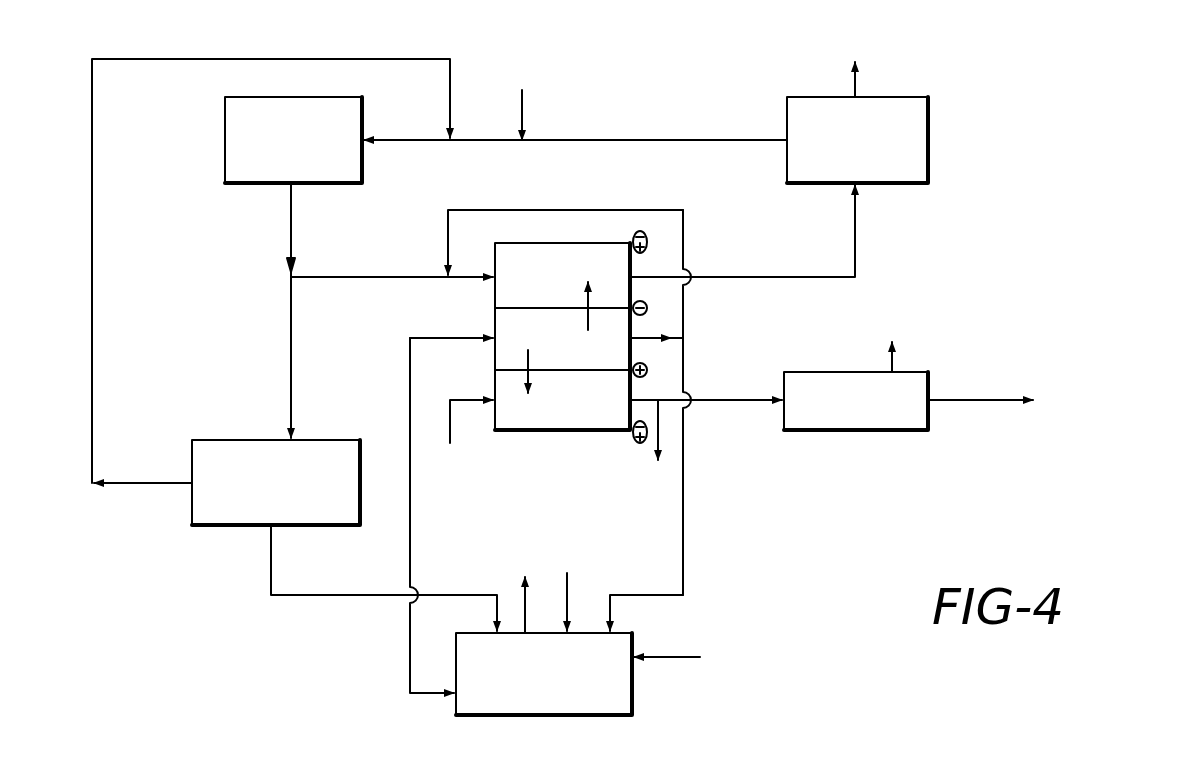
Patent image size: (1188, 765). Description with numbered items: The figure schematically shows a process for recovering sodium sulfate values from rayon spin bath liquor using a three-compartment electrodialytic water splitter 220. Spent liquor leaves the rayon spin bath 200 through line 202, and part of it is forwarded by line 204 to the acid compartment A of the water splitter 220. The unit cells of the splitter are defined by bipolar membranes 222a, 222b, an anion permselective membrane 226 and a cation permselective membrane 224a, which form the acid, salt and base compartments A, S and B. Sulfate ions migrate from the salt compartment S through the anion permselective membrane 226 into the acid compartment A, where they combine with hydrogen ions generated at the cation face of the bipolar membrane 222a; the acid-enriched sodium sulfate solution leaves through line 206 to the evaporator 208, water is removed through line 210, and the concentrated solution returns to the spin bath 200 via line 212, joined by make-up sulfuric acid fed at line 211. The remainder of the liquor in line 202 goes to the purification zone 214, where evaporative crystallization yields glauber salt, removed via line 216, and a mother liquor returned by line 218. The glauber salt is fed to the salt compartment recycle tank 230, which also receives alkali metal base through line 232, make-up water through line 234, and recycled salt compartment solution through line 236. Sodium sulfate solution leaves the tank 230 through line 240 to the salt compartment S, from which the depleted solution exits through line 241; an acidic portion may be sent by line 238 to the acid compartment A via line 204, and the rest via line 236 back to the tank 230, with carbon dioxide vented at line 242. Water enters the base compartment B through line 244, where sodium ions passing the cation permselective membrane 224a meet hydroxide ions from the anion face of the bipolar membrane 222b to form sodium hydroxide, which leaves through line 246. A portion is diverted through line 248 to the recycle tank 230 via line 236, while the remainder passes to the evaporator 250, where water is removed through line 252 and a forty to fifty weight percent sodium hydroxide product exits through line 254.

The rayon spin bath 200 is at (225, 130).
The line 202 is at (289, 250).
The line 204 is at (321, 278).
The line 206 is at (855, 253).
The evaporator 208 is at (928, 138).
The line 210 is at (855, 88).
The make-up sulfuric acid feed 211 is at (522, 112).
The line 212 is at (622, 142).
The purification zone 214 is at (232, 440).
The line 216 is at (270, 575).
The line 218 is at (450, 90).
The three-compartment electrodialytic water splitter 220 is at (595, 432).
The bipolar membrane 222a is at (620, 242).
The bipolar membrane 222b is at (630, 436).
The cation permselective membrane 224a is at (632, 360).
The anion permselective membrane 226 is at (632, 302).
The salt compartment recycle tank 230 is at (540, 715).
The line 232 is at (568, 598).
The line 234 is at (672, 660).
The line 236 is at (683, 585).
The line 238 is at (511, 210).
The line 240 is at (410, 378).
The line 241 is at (648, 338).
The carbon dioxide vent line 242 is at (522, 603).
The line 244 is at (450, 443).
The line 246 is at (745, 400).
The line 248 is at (658, 438).
The evaporator 250 is at (858, 430).
The line 252 is at (892, 370).
The 40% sodium hydroxide product line 254 is at (960, 400).